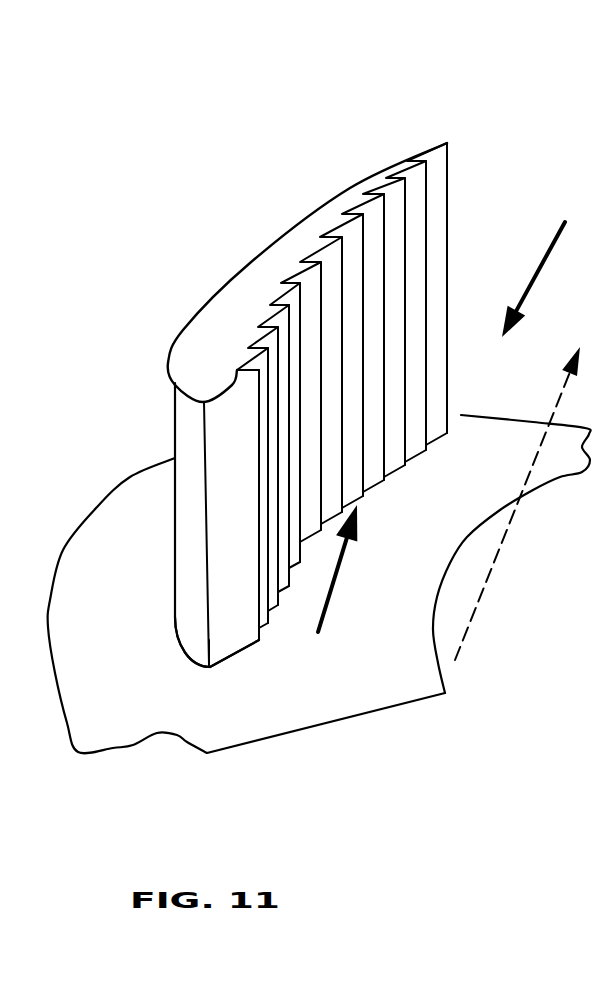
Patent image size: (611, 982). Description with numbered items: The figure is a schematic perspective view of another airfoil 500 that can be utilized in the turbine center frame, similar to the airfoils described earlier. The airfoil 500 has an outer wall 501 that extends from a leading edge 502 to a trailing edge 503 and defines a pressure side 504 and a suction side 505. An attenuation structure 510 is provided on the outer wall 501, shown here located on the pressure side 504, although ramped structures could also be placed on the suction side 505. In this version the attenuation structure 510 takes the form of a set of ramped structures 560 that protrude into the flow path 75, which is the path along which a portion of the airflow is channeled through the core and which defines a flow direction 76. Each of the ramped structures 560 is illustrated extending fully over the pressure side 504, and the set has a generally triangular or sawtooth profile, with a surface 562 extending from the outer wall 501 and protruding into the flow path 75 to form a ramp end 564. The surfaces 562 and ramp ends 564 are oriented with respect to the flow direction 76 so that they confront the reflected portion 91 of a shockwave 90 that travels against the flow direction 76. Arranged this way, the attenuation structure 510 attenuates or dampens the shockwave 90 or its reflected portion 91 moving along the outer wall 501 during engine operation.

The flow path 75 is at (144, 397).
The flow direction 76 is at (502, 550).
The shockwave 90 is at (332, 602).
The reflected portion 91 is at (547, 263).
The airfoil 500 is at (404, 91).
The outer wall 501 is at (219, 300).
The leading edge 502 is at (212, 648).
The trailing edge 503 is at (445, 218).
The pressure side 504 is at (227, 647).
The suction side 505 is at (195, 645).
The attenuation structure 510 is at (409, 259).
The set of ramped structures 560 is at (242, 443).
The surface 562 is at (338, 232).
The ramp end 564 is at (356, 218).